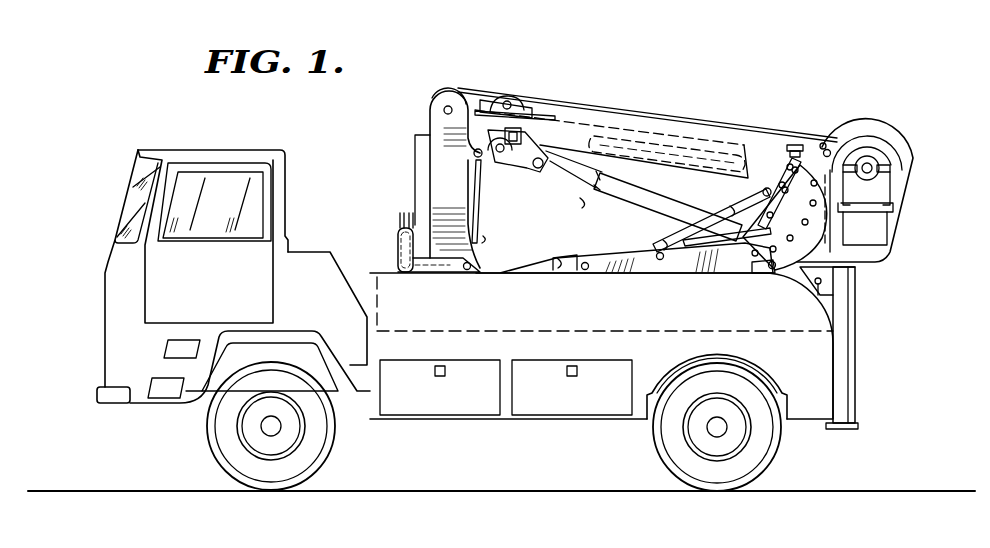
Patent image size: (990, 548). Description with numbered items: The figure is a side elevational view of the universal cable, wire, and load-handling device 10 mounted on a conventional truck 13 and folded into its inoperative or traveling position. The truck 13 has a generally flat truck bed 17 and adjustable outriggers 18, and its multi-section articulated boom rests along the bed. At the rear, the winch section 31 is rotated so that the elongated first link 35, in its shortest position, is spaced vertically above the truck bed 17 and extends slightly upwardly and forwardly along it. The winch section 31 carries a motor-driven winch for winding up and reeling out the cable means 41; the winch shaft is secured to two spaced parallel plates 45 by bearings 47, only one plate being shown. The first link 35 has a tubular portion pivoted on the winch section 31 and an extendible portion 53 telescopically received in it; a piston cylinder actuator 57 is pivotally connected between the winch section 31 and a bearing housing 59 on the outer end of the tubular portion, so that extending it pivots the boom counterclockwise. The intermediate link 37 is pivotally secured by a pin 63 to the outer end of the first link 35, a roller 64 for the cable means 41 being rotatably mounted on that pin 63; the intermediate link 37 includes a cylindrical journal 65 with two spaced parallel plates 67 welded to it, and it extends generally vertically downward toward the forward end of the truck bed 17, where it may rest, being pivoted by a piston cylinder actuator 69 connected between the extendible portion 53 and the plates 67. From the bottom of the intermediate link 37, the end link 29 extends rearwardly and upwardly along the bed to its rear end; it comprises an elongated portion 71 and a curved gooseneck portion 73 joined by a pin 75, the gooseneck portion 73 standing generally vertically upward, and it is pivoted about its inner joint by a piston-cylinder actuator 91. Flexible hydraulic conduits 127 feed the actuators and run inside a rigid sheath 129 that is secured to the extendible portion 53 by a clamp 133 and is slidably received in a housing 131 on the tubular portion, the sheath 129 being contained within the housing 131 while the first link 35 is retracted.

The universal cable, wire, and load-handling device 10 is at (306, 137).
The truck 13 is at (103, 297).
The truck bed 17 is at (643, 331).
The adjustable outriggers 18 is at (856, 427).
The end link 29 is at (611, 259).
The winch section 31 is at (916, 160).
The first link 35 is at (663, 128).
The intermediate link 37 is at (418, 161).
The cable means 41 is at (744, 122).
The spaced parallel plates 45 is at (885, 224).
The bearings 47 is at (879, 165).
The extendible portion 53 is at (492, 118).
The piston cylinder actuator 57 is at (683, 210).
The bearing housing 59 is at (533, 160).
The pin 63 is at (447, 108).
The roller 64 is at (431, 100).
The journal 65 is at (423, 150).
The spaced parallel plates 67 is at (437, 185).
The piston cylinder actuator 69 is at (474, 202).
The elongated portion 71 is at (636, 256).
The gooseneck portion 73 is at (862, 268).
The pin 75 is at (776, 268).
The piston-cylinder actuator 91 is at (553, 262).
The flexible hydraulic conduits 127 is at (483, 110).
The rigid sheath 129 is at (582, 127).
The housing 131 is at (751, 160).
The clamp 133 is at (457, 130).